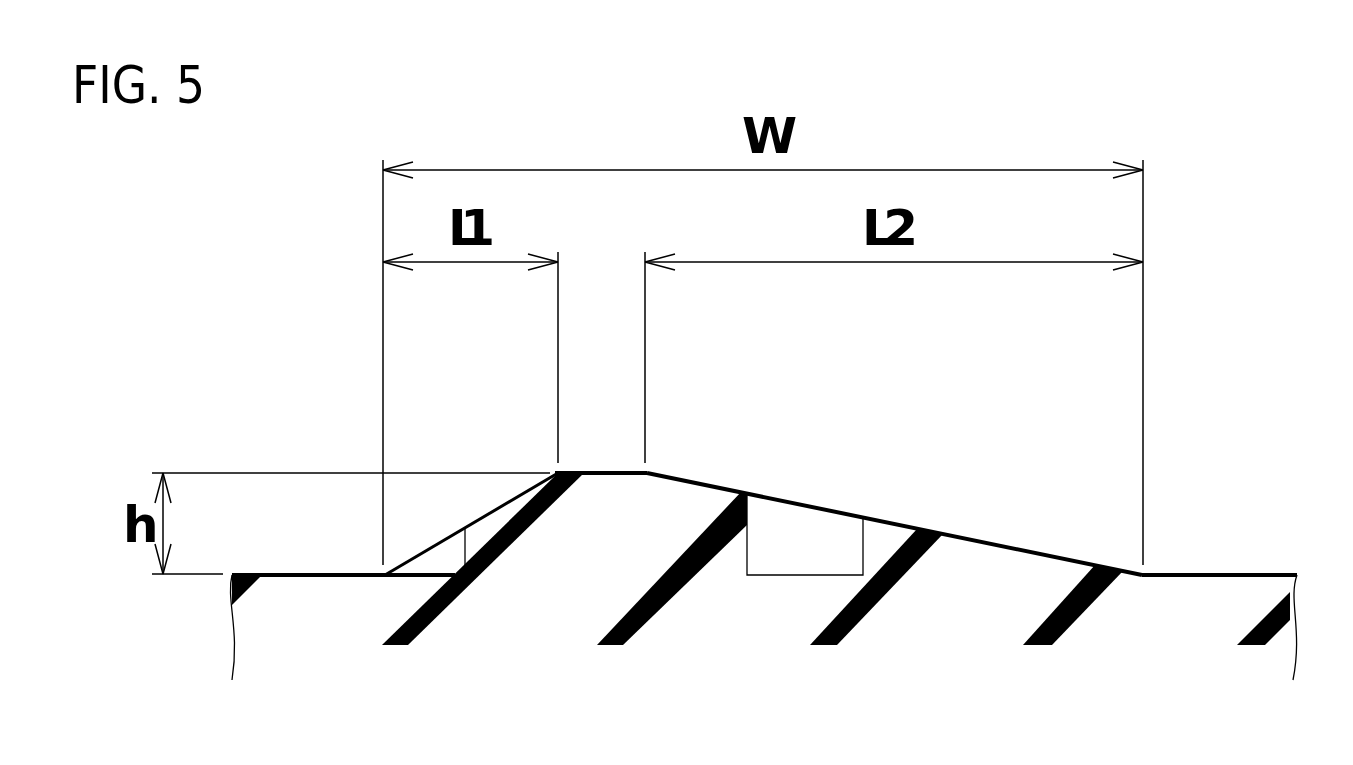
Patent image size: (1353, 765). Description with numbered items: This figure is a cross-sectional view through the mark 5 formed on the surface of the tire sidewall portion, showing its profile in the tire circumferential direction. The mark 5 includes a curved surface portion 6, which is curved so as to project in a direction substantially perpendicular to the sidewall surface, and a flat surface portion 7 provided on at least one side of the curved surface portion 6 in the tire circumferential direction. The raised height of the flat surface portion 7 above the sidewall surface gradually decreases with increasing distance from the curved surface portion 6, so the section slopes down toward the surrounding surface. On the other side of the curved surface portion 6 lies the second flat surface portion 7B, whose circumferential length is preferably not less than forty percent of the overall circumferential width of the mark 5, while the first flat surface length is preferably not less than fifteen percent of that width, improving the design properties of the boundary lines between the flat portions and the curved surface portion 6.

The mark 5 is at (782, 428).
The curved surface portion 6 is at (602, 473).
The flat surface portion 7 is at (493, 510).
The second flat surface portion 7B is at (708, 483).